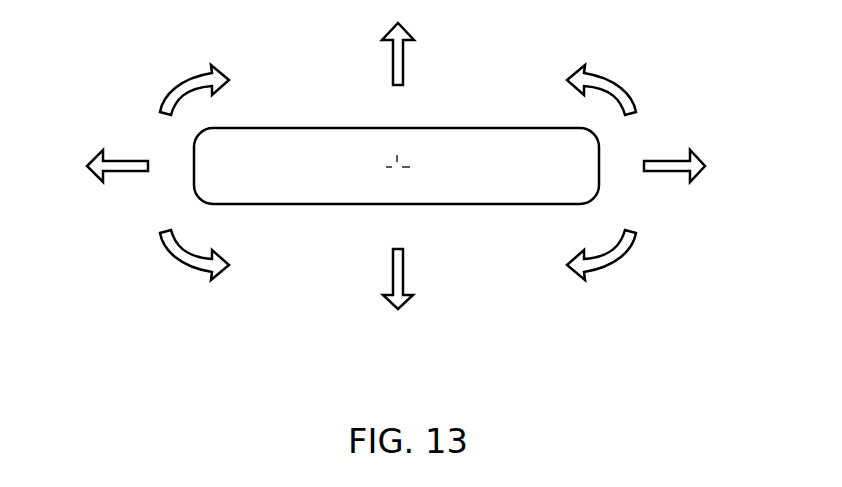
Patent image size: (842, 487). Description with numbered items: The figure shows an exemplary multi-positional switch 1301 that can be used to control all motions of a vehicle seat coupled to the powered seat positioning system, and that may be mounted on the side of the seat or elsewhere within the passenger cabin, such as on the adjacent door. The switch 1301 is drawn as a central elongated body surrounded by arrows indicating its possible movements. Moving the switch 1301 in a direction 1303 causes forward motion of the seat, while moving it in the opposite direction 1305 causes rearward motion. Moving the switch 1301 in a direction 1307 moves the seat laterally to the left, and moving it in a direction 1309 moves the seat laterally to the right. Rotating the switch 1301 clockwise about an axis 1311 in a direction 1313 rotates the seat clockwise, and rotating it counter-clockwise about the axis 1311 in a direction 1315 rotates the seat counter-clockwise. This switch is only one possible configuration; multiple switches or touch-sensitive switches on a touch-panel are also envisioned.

The multi-positional switch 1301 is at (347, 180).
The direction 1303 is at (675, 172).
The direction 1305 is at (125, 172).
The direction 1307 is at (404, 62).
The direction 1309 is at (404, 270).
The axis 1311 is at (397, 170).
The direction 1313 is at (614, 78).
The direction 1315 is at (185, 78).